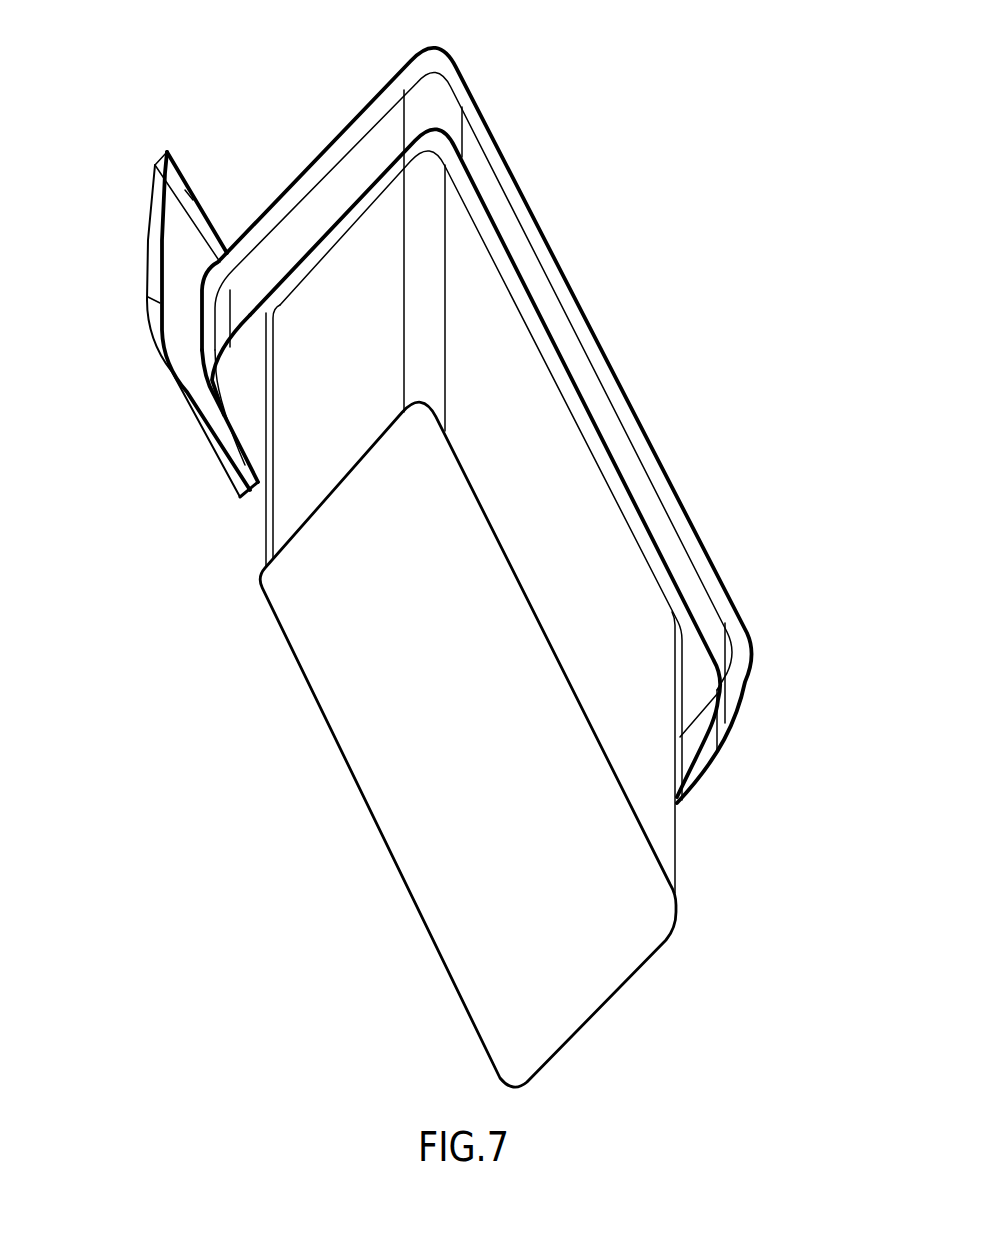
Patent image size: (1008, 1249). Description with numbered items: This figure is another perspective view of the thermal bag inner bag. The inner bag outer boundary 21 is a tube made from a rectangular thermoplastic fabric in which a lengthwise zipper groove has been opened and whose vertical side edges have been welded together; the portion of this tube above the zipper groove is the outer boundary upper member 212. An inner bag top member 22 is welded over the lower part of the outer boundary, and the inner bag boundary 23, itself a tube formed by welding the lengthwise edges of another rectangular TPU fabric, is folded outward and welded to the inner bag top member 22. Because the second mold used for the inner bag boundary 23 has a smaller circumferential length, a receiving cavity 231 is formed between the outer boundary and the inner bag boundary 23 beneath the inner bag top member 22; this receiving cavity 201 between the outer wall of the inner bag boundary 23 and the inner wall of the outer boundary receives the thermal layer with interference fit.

The inner bag top member 22 is at (555, 231).
The inner bag outer boundary 21 is at (630, 452).
The inner bag boundary 23 is at (302, 707).
The receiving cavity 231 is at (700, 680).
The outer boundary upper member 212 is at (210, 210).
The receiving cavity 201 is at (250, 380).